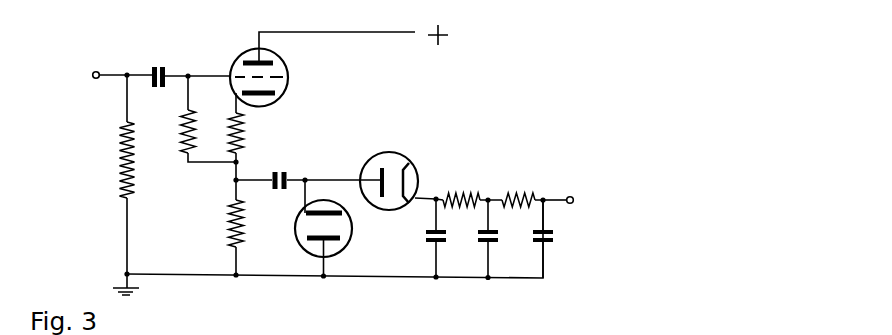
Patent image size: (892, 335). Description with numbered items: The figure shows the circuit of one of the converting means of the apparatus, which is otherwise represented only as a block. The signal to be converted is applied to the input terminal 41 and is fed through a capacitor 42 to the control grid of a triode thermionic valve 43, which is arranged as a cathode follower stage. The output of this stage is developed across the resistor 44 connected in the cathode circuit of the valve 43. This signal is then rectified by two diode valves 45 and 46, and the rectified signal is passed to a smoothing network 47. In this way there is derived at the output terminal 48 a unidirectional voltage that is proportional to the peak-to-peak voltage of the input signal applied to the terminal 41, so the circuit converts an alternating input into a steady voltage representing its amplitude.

The input terminal 41 is at (120, 64).
The capacitor 42 is at (159, 65).
The triode thermionic valve 43 is at (288, 77).
The resistor 44 is at (224, 237).
The diode valve 45 is at (390, 152).
The diode valve 46 is at (352, 238).
The smoothing network 47 is at (521, 270).
The output terminal 48 is at (562, 188).